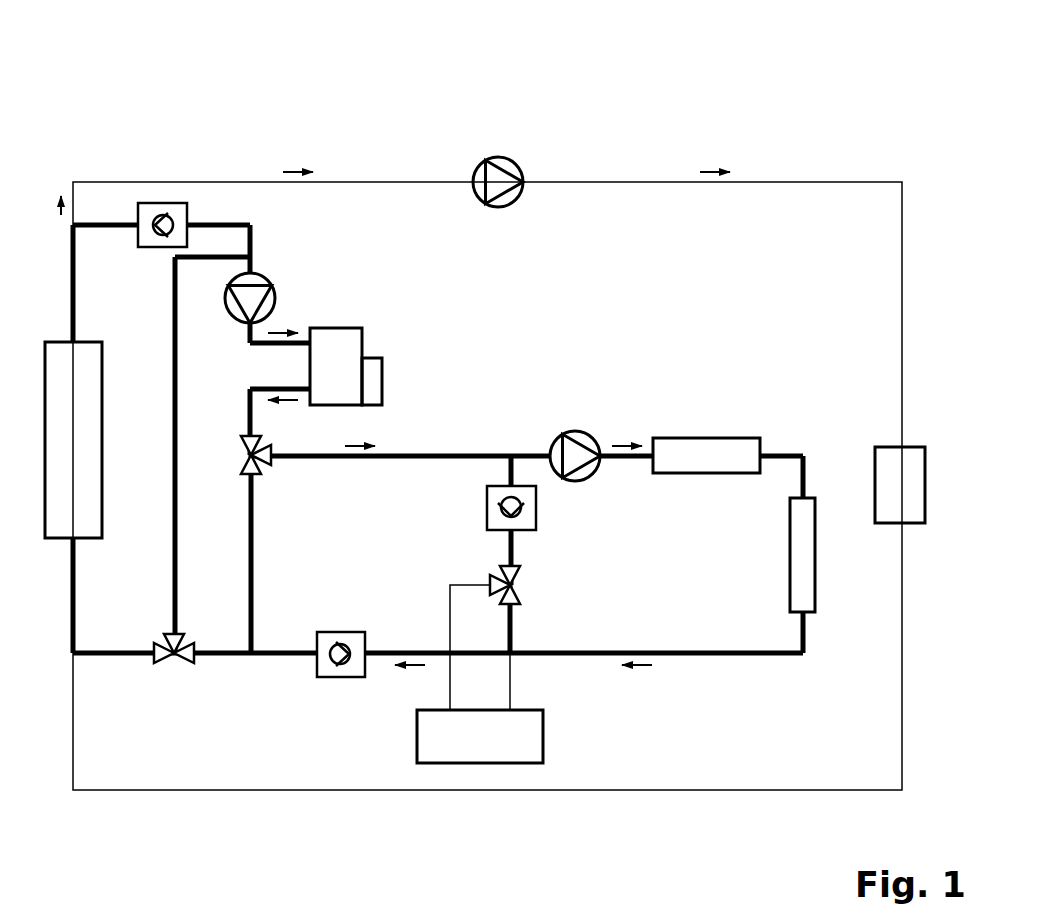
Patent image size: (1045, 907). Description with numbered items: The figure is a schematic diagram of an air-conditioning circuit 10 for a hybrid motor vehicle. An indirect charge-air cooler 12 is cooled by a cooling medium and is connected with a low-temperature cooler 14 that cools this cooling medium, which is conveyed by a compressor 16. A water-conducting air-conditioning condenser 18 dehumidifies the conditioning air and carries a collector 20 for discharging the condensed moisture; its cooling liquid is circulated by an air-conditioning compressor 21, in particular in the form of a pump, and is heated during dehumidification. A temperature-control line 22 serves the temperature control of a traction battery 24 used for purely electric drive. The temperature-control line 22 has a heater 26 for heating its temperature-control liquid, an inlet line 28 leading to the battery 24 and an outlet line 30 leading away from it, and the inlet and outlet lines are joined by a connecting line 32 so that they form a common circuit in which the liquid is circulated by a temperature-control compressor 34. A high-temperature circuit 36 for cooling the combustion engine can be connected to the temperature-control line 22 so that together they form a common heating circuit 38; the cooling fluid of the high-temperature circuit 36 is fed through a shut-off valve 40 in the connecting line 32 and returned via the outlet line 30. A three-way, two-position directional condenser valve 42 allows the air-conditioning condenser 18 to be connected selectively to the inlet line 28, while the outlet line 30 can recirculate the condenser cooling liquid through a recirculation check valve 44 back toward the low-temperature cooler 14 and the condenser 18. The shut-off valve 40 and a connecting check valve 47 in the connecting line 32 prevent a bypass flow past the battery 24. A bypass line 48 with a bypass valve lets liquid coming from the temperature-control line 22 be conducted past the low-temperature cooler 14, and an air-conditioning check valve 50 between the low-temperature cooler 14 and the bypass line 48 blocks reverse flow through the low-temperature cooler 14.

The air-conditioning circuit 10 is at (742, 84).
The indirect charge-air cooler 12 is at (912, 447).
The low-temperature cooler 14 is at (60, 342).
The compressor 16 is at (510, 160).
The air-conditioning condenser 18 is at (338, 328).
The collector 20 is at (382, 378).
The air-conditioning compressor 21 is at (261, 281).
The temperature-control line 22 is at (780, 406).
The traction battery 24 is at (790, 552).
The heater 26 is at (706, 438).
The inlet line 28 is at (528, 455).
The outlet line 30 is at (718, 656).
The connecting line 32 is at (513, 628).
The temperature-control compressor 34 is at (592, 436).
The high-temperature circuit 36 is at (417, 736).
The common heating circuit 38 is at (279, 684).
The shut-off valve 40 is at (523, 580).
The 3/2 directional condenser valve 42 is at (248, 436).
The recirculation check valve 44 is at (333, 632).
The connecting check valve 47 is at (487, 506).
The bypass line 48 is at (175, 588).
The air-conditioning check valve 50 is at (170, 203).